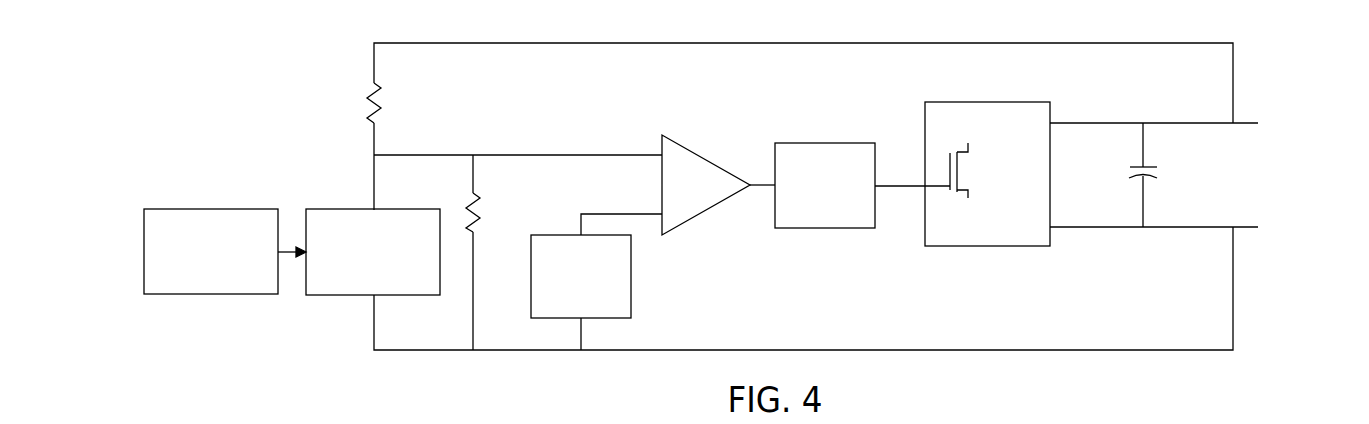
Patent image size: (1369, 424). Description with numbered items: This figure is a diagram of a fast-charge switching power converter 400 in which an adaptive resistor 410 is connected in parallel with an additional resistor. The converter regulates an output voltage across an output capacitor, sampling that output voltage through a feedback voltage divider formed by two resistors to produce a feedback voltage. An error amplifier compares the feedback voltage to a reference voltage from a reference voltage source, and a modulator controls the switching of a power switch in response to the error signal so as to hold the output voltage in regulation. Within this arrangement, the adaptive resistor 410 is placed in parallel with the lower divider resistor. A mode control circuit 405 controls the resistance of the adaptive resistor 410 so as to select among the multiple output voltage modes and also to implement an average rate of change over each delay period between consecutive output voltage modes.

The switching power converter 400 is at (751, 26).
The mode control circuit 405 is at (210, 209).
The adaptive resistor 410 is at (337, 209).